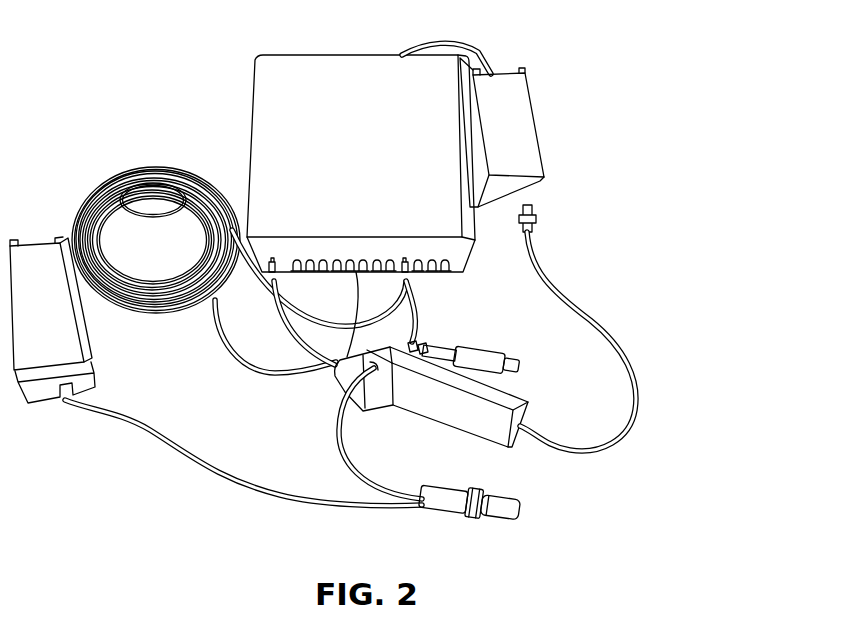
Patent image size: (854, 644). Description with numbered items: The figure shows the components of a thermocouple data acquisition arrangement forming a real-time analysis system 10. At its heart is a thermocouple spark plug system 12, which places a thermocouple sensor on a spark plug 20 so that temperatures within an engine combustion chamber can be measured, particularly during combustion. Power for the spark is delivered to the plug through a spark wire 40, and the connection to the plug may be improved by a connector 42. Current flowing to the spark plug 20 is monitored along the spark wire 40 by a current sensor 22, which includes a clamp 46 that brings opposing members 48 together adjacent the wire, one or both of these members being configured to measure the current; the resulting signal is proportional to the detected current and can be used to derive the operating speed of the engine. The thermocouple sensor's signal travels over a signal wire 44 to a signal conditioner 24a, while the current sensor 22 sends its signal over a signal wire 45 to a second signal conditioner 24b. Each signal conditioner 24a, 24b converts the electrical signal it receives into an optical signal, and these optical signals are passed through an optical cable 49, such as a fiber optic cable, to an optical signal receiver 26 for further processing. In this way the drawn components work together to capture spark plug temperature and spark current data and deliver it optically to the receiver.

The real-time analysis system 10 is at (633, 163).
The thermocouple spark plug system 12 is at (516, 494).
The spark plug 20 is at (508, 512).
The current sensor 22 is at (418, 393).
The signal conditioner 24a is at (60, 333).
The signal conditioner 24b is at (512, 122).
The optical signal receiver 26 is at (290, 97).
The spark wire 40 is at (340, 427).
The connector 42 is at (522, 363).
The signal wire 44 is at (187, 455).
The signal wire 45 is at (559, 283).
The clamp 46 is at (421, 334).
The opposing members 48 is at (352, 362).
The optical cable 49 is at (116, 167).